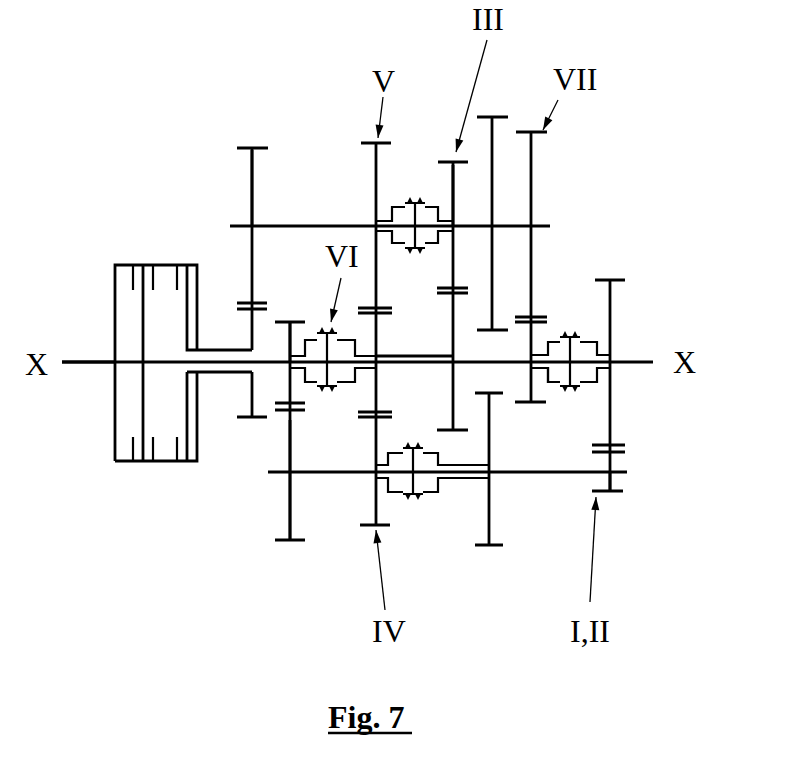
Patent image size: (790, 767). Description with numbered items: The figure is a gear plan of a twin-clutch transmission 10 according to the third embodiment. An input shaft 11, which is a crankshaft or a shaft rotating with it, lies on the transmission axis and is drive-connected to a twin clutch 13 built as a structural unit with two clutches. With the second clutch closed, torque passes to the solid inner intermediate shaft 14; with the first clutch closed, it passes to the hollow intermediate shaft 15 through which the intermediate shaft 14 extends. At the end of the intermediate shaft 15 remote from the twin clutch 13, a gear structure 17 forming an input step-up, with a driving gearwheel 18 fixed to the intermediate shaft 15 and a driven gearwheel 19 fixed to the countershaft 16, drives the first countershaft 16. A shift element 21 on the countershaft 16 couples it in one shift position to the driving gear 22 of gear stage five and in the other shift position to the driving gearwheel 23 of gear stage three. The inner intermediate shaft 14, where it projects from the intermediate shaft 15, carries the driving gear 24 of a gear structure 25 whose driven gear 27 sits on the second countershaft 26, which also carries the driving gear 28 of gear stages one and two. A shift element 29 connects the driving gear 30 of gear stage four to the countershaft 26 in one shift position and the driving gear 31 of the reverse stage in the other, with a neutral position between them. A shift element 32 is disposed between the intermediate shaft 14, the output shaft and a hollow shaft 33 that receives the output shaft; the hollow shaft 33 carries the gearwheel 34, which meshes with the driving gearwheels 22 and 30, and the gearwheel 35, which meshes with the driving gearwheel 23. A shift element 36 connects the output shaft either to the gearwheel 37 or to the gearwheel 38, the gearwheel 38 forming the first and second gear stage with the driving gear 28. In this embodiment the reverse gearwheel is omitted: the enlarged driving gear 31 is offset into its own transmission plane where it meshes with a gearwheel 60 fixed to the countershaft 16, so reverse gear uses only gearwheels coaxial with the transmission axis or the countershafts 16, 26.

The twin-clutch transmission 10 is at (618, 145).
The input shaft 11 is at (83, 365).
The twin clutch 13 is at (100, 460).
The intermediate shaft 14 is at (168, 363).
The intermediate shaft 15 is at (222, 372).
The countershaft 16 is at (276, 222).
The gear structure 17 is at (250, 140).
The driving gearwheel 18 is at (250, 392).
The driven gearwheel 19 is at (250, 192).
The shift element 21 is at (416, 190).
The driving gear 22 is at (373, 182).
The driving gearwheel 23 is at (458, 203).
The driving gear 24 is at (288, 323).
The gear structure 25 is at (289, 546).
The second countershaft 26 is at (628, 473).
The driven gear 27 is at (287, 508).
The driving gear 28 is at (612, 480).
The shift element 29 is at (413, 500).
The driving gear 30 is at (373, 488).
The driving gear 31 is at (487, 485).
The shift element 32 is at (328, 398).
The hollow shaft 33 is at (395, 412).
The gearwheel 34 is at (393, 327).
The gearwheel 35 is at (450, 320).
The shift element 36 is at (579, 393).
The gearwheel 37 is at (530, 385).
The gearwheel 38 is at (612, 310).
The gearwheel 60 is at (494, 158).